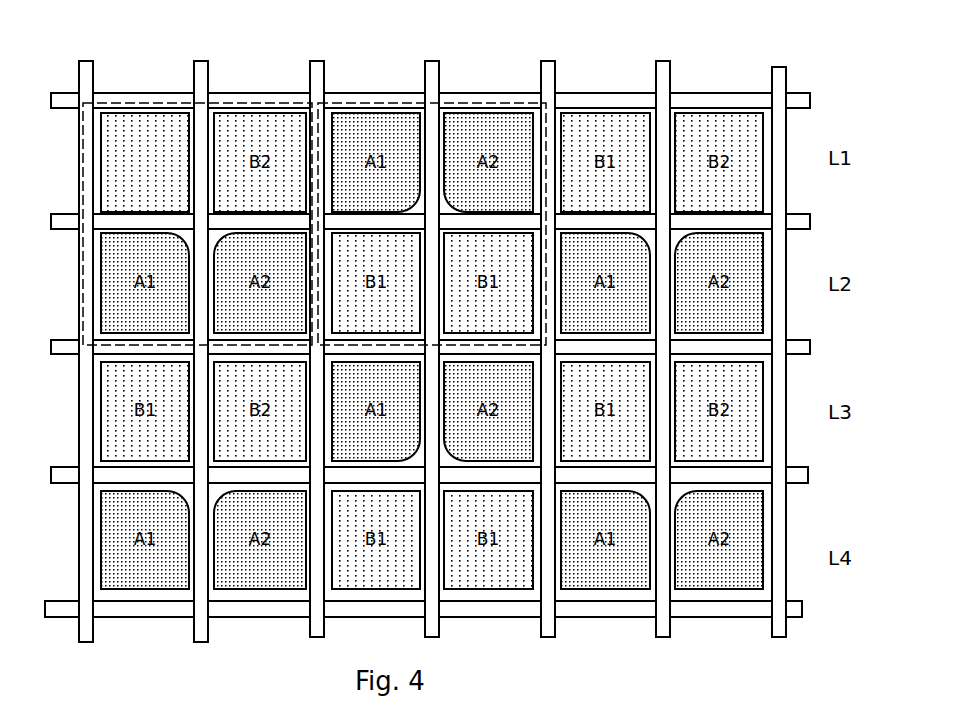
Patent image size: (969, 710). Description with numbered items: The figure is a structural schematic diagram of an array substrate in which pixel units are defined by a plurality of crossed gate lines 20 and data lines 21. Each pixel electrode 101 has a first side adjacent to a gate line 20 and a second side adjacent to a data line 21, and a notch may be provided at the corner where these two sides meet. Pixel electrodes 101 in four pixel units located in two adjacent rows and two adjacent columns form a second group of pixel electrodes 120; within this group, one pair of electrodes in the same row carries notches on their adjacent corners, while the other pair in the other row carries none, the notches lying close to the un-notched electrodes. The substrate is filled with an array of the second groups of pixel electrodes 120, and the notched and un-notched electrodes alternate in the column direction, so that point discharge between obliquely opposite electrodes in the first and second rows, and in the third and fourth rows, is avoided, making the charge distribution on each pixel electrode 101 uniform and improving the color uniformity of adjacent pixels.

The gate line 20 is at (800, 97).
The data line 21 is at (780, 72).
The pixel electrode 101 is at (120, 158).
The second group of pixel electrodes 120 is at (150, 101).